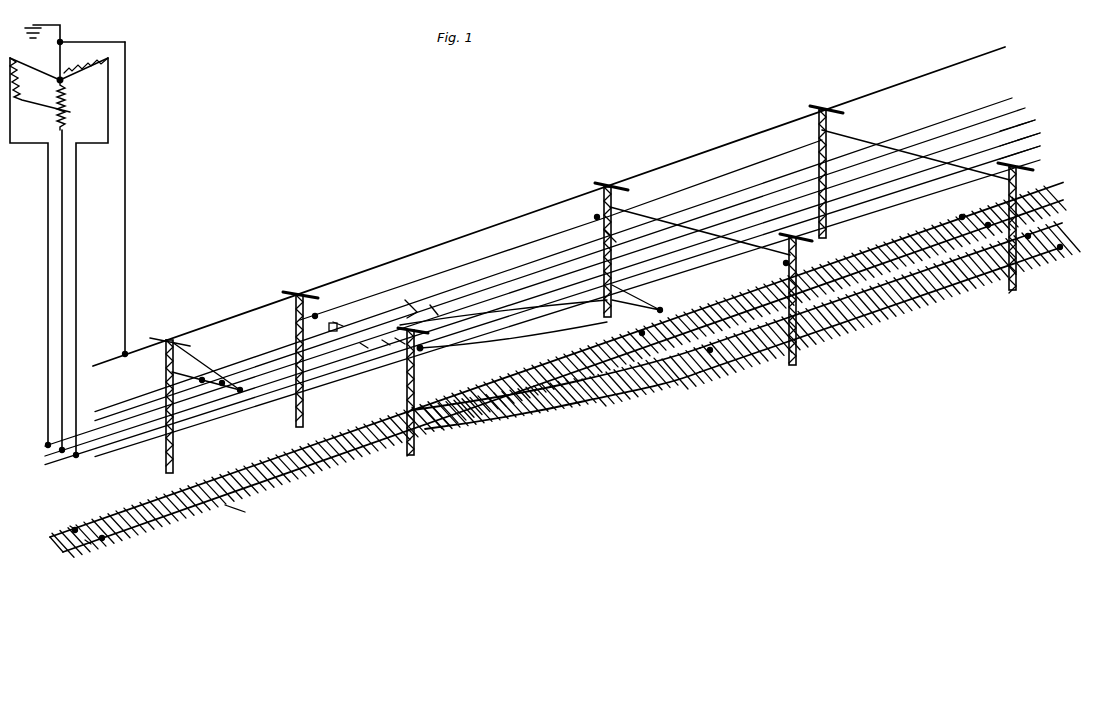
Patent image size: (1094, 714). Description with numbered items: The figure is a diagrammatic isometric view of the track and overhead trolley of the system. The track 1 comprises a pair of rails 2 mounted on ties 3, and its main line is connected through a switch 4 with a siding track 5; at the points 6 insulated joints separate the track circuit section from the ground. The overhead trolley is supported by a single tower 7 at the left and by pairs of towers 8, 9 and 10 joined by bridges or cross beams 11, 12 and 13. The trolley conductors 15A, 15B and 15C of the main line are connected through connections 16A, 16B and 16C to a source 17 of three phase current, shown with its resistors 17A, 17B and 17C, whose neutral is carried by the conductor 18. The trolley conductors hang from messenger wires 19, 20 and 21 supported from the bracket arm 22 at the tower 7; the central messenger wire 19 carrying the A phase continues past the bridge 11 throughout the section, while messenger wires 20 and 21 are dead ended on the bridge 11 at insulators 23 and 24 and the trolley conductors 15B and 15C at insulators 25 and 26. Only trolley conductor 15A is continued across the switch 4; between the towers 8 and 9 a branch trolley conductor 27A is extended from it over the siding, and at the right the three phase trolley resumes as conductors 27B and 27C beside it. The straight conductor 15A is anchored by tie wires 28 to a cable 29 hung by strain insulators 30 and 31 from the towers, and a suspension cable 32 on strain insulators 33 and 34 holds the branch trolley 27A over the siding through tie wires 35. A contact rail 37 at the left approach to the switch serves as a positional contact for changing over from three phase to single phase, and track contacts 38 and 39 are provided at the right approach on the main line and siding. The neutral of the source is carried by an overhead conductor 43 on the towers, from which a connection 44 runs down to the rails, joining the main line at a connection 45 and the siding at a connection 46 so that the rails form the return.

The track 1 is at (145, 498).
The rails 2 is at (63, 553).
The ties 3 is at (48, 542).
The switch 4 is at (460, 415).
The siding track 5 is at (670, 385).
The insulated joints 6 is at (1060, 247).
The tower 7 is at (172, 372).
The towers 8 is at (414, 372).
The towers 9 is at (797, 250).
The towers 10 is at (1018, 180).
The bridge 11 is at (405, 350).
The bridge 12 is at (700, 230).
The bridge 13 is at (986, 182).
The trolley conductor 15A is at (540, 292).
The trolley conductor 15B is at (62, 450).
The trolley conductor 15C is at (76, 455).
The connection 16A is at (62, 280).
The connection 16B is at (48, 294).
The connection 16C is at (76, 311).
The source of three phase current 17 is at (75, 52).
The resistor 17A is at (44, 103).
The resistor 17B is at (40, 85).
The resistor 17C is at (84, 72).
The conductor 18 is at (125, 177).
The messenger wire 19 is at (520, 283).
The messenger wire 20 is at (165, 394).
The messenger wire 21 is at (157, 426).
The bracket arm 22 is at (190, 352).
The insulator 23 is at (333, 322).
The insulator 24 is at (385, 350).
The insulator 25 is at (340, 328).
The insulator 26 is at (365, 348).
The branch trolley conductor 27A is at (560, 312).
The wire 27B is at (1040, 133).
The wire 27C is at (1040, 160).
The tie wires 28 is at (430, 305).
The cable 29 is at (470, 265).
The strain insulator 30 is at (315, 316).
The strain insulator 31 is at (597, 217).
The suspension cable 32 is at (470, 346).
The strain insulator 33 is at (420, 348).
The strain insulator 34 is at (786, 263).
The tie wires 35 is at (648, 300).
The contact rail 37 is at (235, 510).
The track contact 38 is at (897, 246).
The track contact 39 is at (905, 305).
The neutral conductor 43 is at (745, 140).
The connection 44 is at (603, 240).
The connection 45 is at (642, 333).
The connection 46 is at (710, 350).